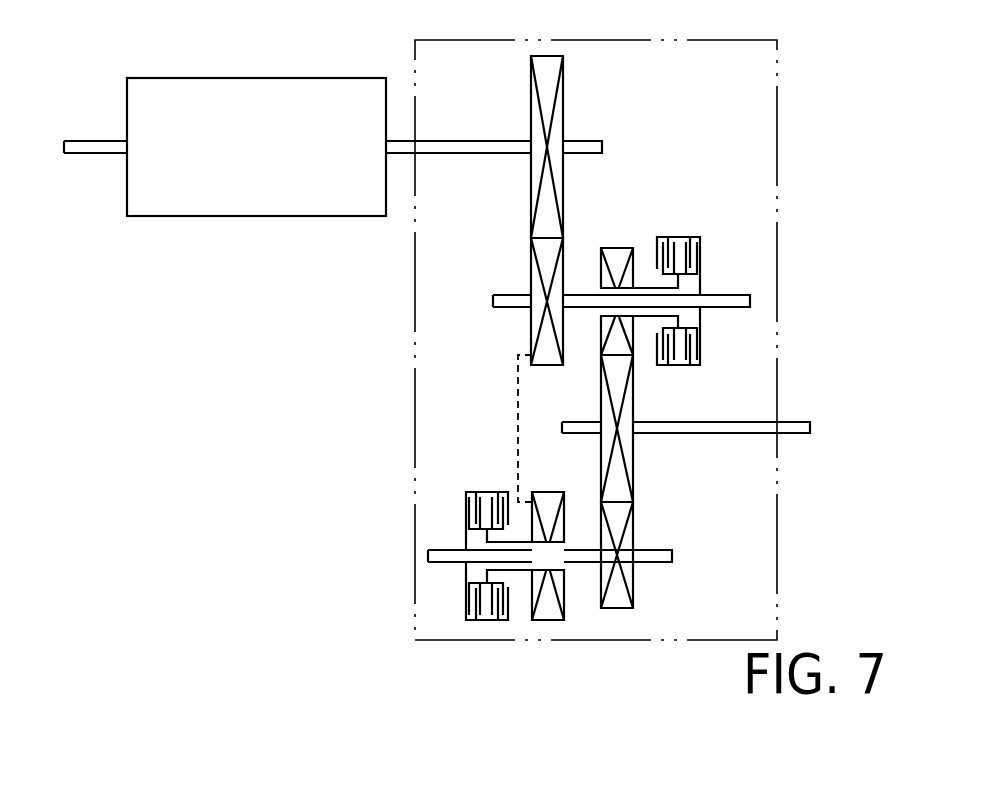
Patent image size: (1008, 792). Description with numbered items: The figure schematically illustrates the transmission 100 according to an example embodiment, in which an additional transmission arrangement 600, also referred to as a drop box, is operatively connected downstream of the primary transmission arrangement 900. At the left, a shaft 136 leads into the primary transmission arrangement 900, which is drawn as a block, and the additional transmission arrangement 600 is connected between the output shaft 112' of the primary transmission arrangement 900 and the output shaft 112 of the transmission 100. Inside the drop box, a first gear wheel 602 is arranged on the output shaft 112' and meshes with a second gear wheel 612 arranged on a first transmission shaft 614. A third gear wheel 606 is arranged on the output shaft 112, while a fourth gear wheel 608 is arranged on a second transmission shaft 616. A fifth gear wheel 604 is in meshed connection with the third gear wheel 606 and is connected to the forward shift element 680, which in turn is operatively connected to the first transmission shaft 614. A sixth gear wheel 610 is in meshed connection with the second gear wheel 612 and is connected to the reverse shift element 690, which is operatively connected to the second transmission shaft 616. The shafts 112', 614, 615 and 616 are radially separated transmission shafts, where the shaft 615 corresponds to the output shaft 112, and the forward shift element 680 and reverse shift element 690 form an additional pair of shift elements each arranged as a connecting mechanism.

The transmission 100 is at (241, 438).
The output shaft 112 is at (732, 416).
The output shaft of the primary transmission arrangement 112' is at (463, 77).
The shaft 136 is at (95, 154).
The additional transmission arrangement 600 is at (779, 190).
The first gear wheel 602 is at (566, 100).
The fifth gear wheel 604 is at (618, 248).
The third gear wheel 606 is at (636, 470).
The fourth gear wheel 608 is at (636, 596).
The sixth gear wheel 610 is at (548, 492).
The second gear wheel 612 is at (531, 270).
The first transmission shaft 614 is at (752, 300).
The transmission shaft 615 is at (562, 428).
The second transmission shaft 616 is at (428, 556).
The forward shift element 680 is at (701, 213).
The reverse shift element 690 is at (441, 496).
The primary transmission arrangement 900 is at (253, 218).